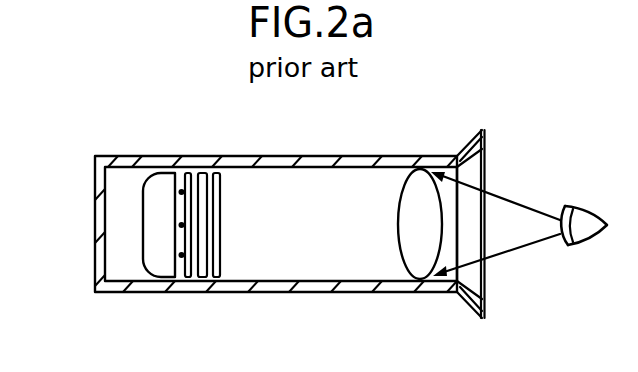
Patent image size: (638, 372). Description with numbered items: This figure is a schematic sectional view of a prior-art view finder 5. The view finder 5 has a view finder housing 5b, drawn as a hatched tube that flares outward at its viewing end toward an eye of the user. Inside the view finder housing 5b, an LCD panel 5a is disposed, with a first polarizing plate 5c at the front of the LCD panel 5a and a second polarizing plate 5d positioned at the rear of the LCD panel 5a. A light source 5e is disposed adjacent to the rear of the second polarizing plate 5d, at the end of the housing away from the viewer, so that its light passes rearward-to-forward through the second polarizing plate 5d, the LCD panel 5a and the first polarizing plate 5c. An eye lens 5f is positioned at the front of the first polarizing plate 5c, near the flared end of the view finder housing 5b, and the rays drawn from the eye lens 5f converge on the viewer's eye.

The view finder 5 is at (95, 164).
The LCD panel 5a is at (199, 281).
The view finder housing 5b is at (322, 293).
The first polarizing plate 5c is at (215, 281).
The second polarizing plate 5d is at (188, 281).
The light source 5e is at (152, 253).
The eye lens 5f is at (420, 280).